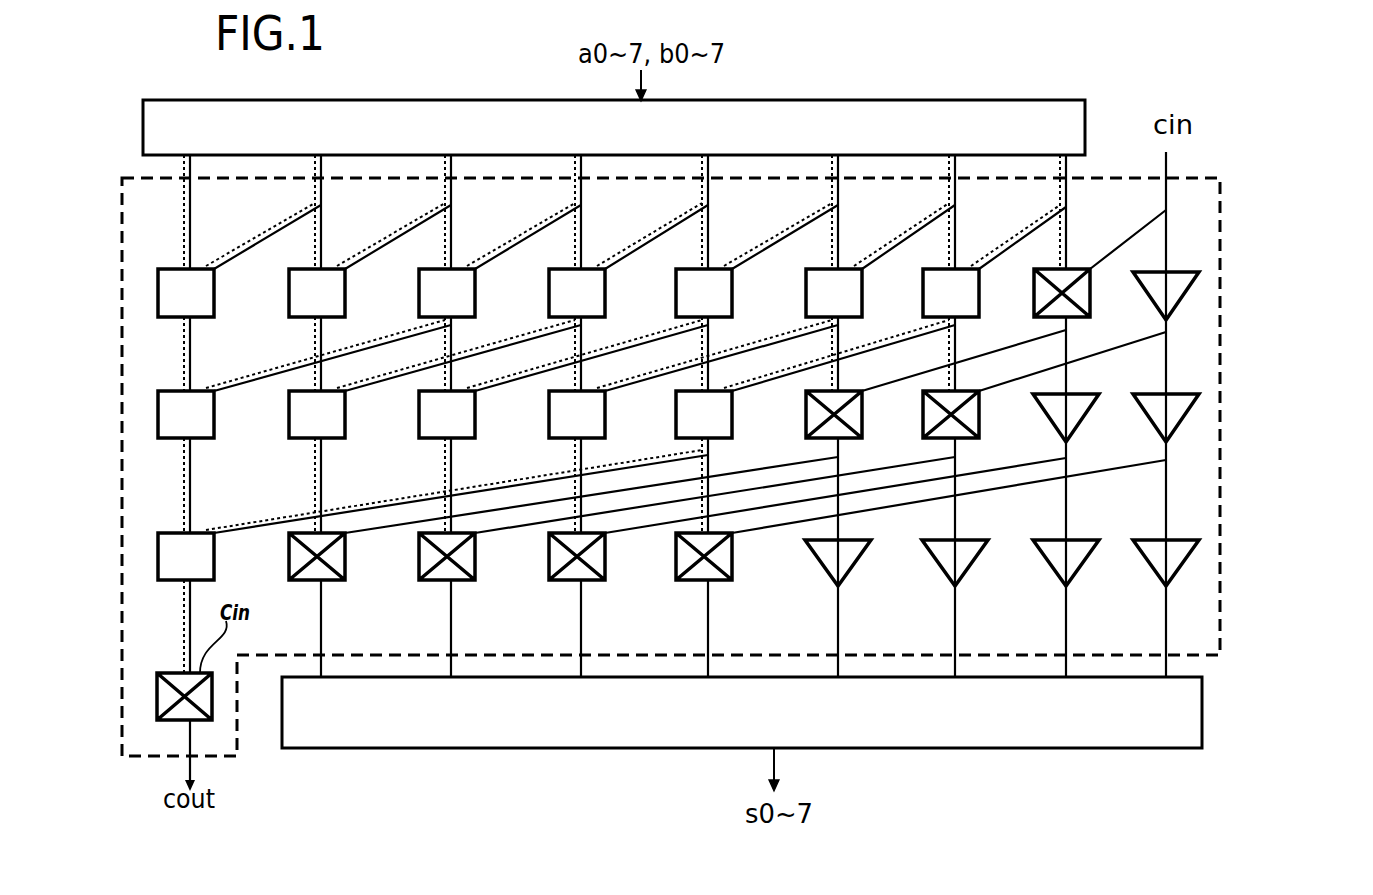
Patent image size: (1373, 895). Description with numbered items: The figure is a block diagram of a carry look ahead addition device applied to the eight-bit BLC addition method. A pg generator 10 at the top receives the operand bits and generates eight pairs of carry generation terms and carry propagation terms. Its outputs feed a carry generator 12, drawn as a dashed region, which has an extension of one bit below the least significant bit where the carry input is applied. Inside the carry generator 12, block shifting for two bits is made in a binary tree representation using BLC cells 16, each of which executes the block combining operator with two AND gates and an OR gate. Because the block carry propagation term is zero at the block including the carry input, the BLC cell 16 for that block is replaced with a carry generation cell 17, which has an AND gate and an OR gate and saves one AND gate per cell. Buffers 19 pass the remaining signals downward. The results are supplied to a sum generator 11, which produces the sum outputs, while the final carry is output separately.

The pg generator 10 is at (866, 101).
The sum generator 11 is at (1032, 749).
The carry generator 12 is at (1220, 215).
The BLC cell 16 is at (158, 545).
The carry generation cell 17 is at (1093, 305).
The buffer 19 is at (1188, 560).